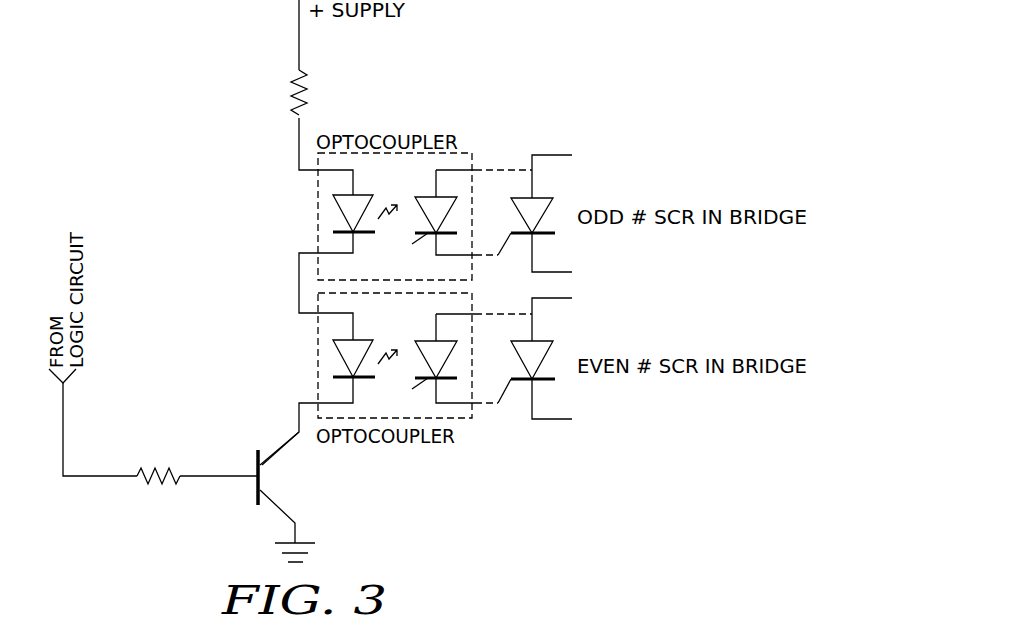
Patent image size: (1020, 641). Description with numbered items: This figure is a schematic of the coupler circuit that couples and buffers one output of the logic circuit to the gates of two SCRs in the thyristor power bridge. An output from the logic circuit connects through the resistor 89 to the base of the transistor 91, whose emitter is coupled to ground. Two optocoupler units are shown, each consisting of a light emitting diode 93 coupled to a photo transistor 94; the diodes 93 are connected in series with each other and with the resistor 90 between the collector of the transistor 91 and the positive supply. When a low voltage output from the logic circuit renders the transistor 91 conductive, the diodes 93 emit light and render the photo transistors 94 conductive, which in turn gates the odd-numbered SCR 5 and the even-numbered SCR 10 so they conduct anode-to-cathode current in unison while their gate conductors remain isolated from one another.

The resistor 90 is at (316, 83).
The light emitting diode 93 is at (332, 215).
The photo transistor 94 is at (457, 207).
The SCR 5 is at (548, 198).
The SCR 10 is at (540, 341).
The resistor 89 is at (134, 467).
The transistor 91 is at (253, 506).